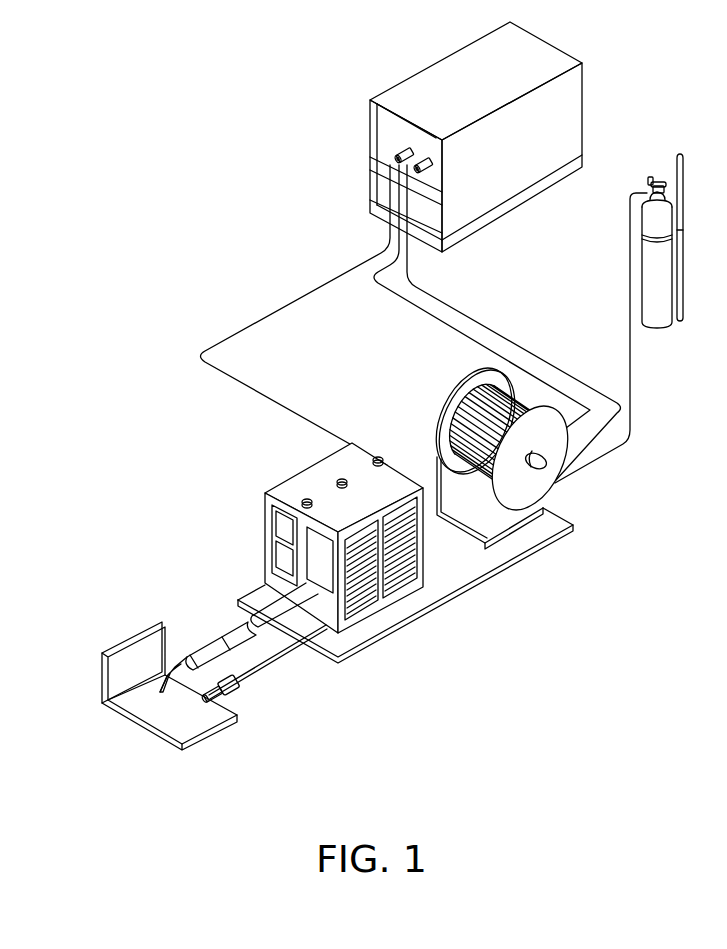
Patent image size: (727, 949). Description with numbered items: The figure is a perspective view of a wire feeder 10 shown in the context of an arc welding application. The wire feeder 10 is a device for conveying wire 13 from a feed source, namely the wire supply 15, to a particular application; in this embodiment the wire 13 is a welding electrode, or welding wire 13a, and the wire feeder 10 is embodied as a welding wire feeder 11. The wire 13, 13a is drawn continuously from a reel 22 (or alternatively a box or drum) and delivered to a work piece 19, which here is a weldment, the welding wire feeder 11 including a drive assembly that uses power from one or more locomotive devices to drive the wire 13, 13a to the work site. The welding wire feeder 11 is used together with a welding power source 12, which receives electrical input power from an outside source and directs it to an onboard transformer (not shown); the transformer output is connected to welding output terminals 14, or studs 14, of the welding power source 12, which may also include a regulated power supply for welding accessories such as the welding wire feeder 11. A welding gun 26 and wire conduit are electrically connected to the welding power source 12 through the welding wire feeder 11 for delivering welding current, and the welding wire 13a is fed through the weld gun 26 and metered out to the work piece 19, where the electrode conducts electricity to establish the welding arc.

The wire feeder 10 is at (286, 538).
The welding wire feeder 11 is at (250, 498).
The welding power source 12 is at (573, 87).
The wire 13 is at (295, 534).
The welding electrode 13a is at (475, 413).
The welding output terminals 14 is at (412, 148).
The wire supply 15 is at (598, 477).
The work piece 19 is at (207, 726).
The reel 22 is at (352, 525).
The welding gun 26 is at (217, 642).